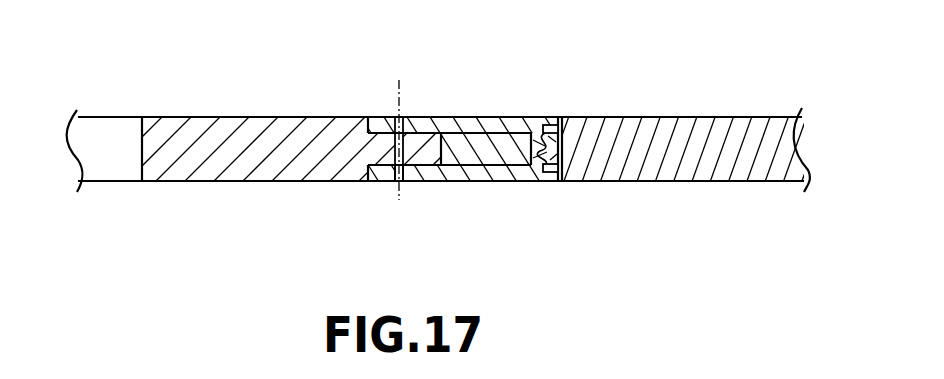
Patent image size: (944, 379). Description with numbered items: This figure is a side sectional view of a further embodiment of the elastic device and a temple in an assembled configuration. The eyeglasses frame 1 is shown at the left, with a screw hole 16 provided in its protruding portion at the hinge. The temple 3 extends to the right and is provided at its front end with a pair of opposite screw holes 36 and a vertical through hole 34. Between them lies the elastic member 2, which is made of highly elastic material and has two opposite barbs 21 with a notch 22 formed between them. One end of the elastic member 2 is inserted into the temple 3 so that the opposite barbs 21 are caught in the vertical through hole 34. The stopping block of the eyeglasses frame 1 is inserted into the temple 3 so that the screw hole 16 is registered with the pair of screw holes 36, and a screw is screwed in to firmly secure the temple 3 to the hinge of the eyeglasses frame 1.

The eyeglasses frame 1 is at (243, 135).
The elastic member 2 is at (483, 143).
The temple 3 is at (708, 133).
The screw holes 36 is at (402, 118).
The screw hole 16 is at (392, 165).
The barbs 21 is at (550, 128).
The notch 22 is at (533, 165).
The vertical through hole 34 is at (553, 177).